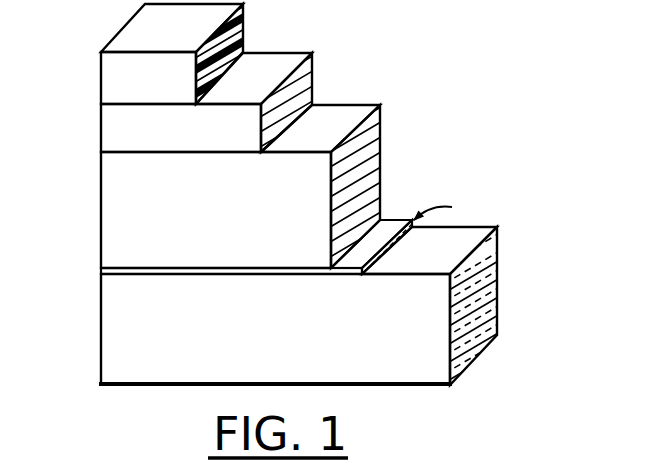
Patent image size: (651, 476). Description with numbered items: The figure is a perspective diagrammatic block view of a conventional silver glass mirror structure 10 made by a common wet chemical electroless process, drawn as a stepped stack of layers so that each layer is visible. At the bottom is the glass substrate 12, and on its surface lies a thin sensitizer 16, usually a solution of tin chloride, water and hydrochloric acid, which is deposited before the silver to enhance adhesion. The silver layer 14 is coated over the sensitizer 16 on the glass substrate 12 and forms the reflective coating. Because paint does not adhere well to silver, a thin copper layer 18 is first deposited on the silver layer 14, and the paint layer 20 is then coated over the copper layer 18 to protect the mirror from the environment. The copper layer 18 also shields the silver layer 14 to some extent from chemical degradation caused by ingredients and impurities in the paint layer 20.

The mirror structure 10 is at (113, 27).
The glass substrate 12 is at (101, 345).
The silver layer 14 is at (101, 229).
The sensitizer 16 is at (101, 268).
The copper layer 18 is at (101, 129).
The paint layer 20 is at (101, 75).